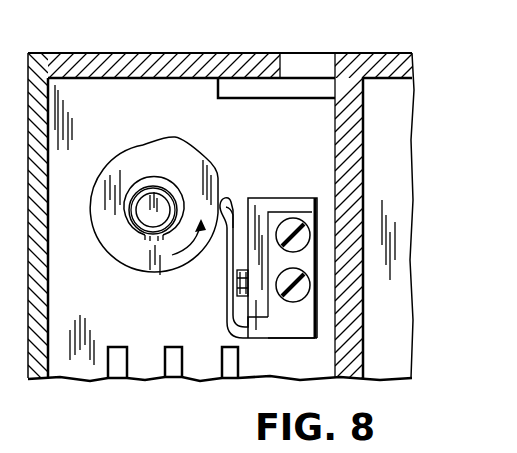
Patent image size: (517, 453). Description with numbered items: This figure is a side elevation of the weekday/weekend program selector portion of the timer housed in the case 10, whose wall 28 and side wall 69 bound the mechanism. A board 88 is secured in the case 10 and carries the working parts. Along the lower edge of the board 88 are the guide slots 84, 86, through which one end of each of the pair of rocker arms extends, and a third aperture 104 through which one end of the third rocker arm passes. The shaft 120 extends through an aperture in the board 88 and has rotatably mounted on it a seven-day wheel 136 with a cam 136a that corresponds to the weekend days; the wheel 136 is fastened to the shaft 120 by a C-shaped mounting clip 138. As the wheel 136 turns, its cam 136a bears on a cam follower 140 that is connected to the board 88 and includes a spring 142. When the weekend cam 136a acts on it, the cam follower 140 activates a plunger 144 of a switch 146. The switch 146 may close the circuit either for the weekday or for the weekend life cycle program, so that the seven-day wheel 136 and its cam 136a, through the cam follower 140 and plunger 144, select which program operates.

The case 10 is at (254, 46).
The top wall 28 is at (94, 5).
The side wall 69 is at (345, 150).
The guide slot 84 is at (112, 373).
The guide slot 86 is at (235, 369).
The board 88 is at (83, 357).
The third aperture 104 is at (170, 373).
The shaft 120 is at (152, 226).
The 7-day wheel 136 is at (140, 265).
The cam 136a is at (212, 176).
The C-shaped mounting clip 138 is at (138, 192).
The cam follower 140 is at (284, 323).
The spring 142 is at (226, 257).
The plunger 144 is at (238, 284).
The switch 146 is at (269, 199).